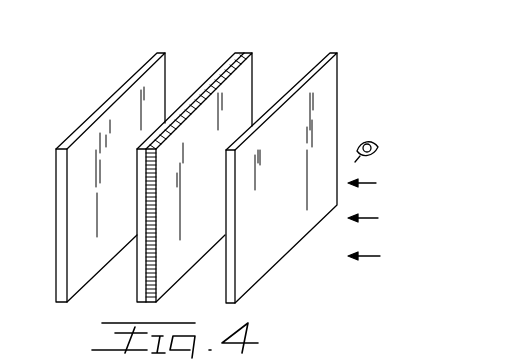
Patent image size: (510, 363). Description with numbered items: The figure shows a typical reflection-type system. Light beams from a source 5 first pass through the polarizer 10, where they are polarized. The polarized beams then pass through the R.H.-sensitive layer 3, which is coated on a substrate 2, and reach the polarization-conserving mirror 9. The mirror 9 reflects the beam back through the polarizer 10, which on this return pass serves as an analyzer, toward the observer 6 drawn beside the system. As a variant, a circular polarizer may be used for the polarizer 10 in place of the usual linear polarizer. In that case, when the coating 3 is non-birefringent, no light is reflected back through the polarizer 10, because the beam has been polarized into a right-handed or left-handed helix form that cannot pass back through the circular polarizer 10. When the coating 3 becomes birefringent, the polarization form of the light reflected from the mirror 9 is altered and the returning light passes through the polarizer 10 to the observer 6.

The substrate 2 is at (209, 157).
The R.H.-sensitive layer 3 is at (253, 52).
The source 5 is at (376, 186).
The observer eye 6 is at (376, 143).
The polarization-conserving mirror 9 is at (167, 52).
The polarizer 10 is at (337, 54).